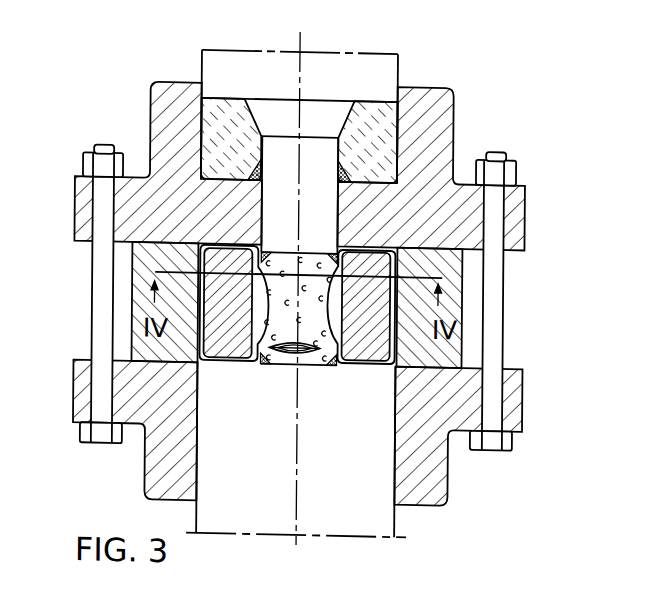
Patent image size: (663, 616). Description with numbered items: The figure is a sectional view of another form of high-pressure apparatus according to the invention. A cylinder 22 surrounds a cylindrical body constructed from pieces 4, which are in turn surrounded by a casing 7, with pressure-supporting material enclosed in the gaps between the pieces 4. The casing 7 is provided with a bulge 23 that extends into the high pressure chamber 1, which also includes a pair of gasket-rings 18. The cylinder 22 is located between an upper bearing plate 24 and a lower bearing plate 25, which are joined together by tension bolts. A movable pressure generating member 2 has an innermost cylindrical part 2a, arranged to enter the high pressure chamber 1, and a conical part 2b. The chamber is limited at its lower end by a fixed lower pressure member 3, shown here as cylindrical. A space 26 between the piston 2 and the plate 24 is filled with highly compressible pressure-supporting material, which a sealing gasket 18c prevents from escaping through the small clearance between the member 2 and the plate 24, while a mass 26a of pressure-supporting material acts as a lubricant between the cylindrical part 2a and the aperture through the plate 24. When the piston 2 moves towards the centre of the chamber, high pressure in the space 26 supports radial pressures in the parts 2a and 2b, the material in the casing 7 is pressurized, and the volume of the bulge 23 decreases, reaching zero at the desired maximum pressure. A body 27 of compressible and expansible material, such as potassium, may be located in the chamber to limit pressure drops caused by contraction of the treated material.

The high pressure chamber 1 is at (273, 258).
The movable pressure generating member 2 is at (380, 61).
The innermost cylindrical part 2a is at (286, 162).
The conical part 2b is at (328, 109).
The fixed lower pressure member 3 is at (231, 460).
The pieces 4 is at (215, 262).
The casing 7 is at (395, 348).
The gasket-rings 18 is at (258, 363).
The sealing gasket 18c is at (163, 85).
The cylinder 22 is at (138, 282).
The bulge 23 is at (337, 282).
The bearing plate 24 is at (471, 156).
The bearing plate 25 is at (441, 407).
The space 26 is at (214, 154).
The mass of pressure-supporting material 26a is at (251, 171).
The body 27 is at (284, 357).